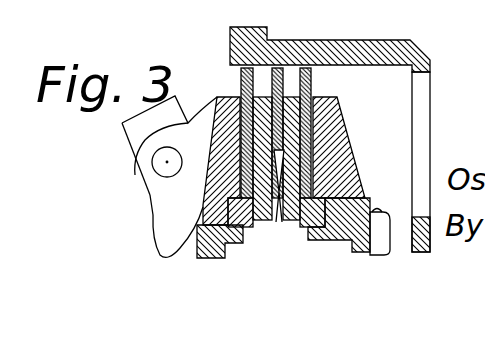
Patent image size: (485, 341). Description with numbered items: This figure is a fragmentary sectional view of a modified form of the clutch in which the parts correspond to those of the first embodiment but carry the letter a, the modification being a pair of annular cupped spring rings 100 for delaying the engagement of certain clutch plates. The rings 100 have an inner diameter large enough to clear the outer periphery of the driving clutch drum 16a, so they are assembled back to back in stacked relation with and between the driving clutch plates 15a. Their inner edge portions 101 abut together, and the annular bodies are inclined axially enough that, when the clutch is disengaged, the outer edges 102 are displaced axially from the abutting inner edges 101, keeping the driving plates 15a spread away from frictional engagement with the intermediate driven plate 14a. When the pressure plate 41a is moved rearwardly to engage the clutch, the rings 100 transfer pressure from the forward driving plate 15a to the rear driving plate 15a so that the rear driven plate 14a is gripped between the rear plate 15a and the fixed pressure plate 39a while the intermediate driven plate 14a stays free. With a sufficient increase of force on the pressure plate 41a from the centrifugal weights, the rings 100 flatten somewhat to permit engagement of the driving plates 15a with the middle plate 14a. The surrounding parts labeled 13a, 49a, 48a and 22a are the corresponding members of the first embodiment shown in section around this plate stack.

The housing frame 13a is at (432, 52).
The driven plate 14a is at (244, 80).
The driving clutch plate 15a is at (264, 97).
The outer edges 102 is at (292, 97).
The fixed pressure plate 39a is at (348, 133).
The annular cupped spring rings 100 is at (283, 162).
The inner edge portions 101 is at (272, 222).
The base block 49a is at (343, 241).
The driving clutch drum 16a is at (392, 205).
The support block 48a is at (207, 260).
The cam member 22a is at (131, 134).
The pressure plate 41a is at (203, 208).